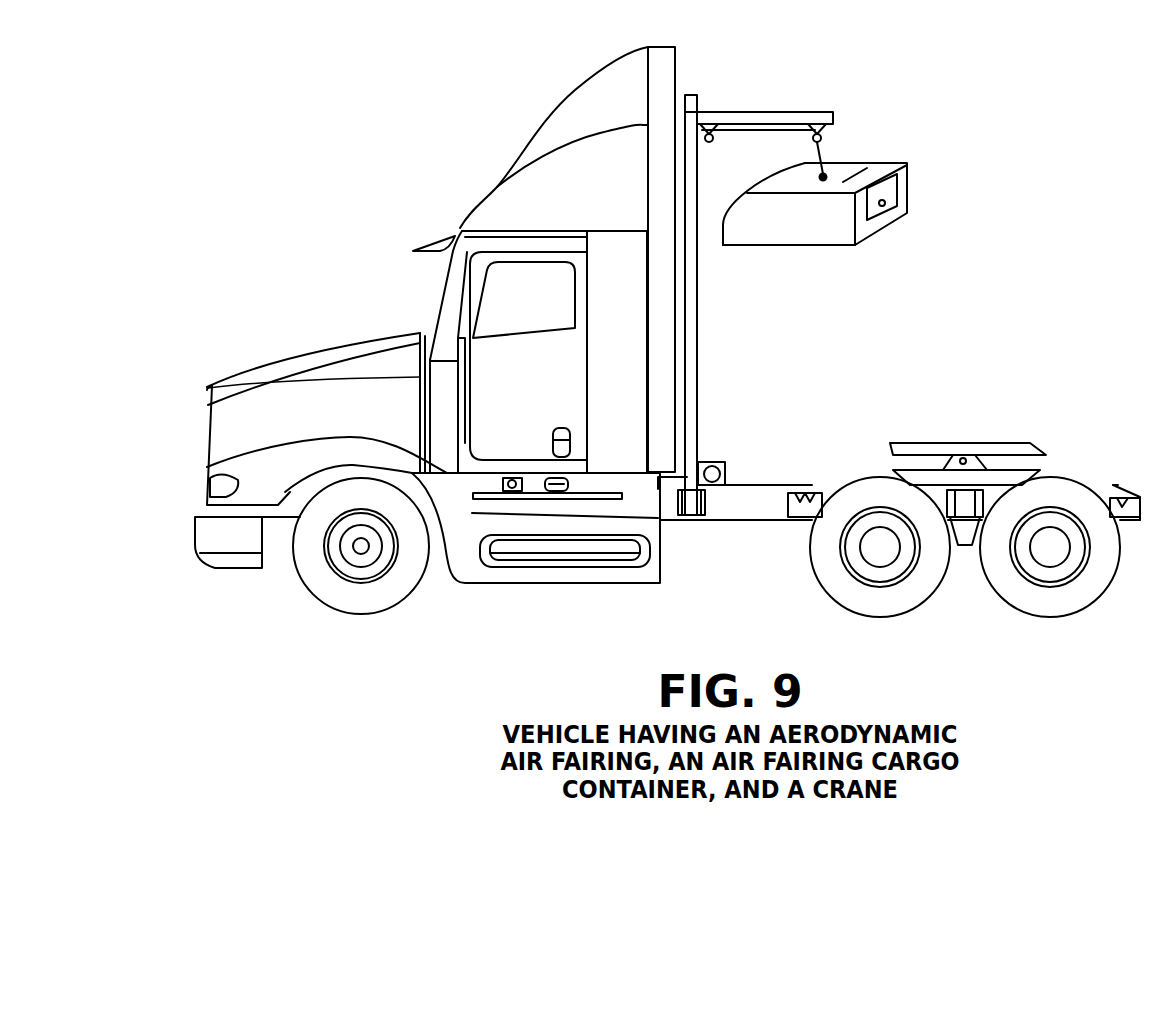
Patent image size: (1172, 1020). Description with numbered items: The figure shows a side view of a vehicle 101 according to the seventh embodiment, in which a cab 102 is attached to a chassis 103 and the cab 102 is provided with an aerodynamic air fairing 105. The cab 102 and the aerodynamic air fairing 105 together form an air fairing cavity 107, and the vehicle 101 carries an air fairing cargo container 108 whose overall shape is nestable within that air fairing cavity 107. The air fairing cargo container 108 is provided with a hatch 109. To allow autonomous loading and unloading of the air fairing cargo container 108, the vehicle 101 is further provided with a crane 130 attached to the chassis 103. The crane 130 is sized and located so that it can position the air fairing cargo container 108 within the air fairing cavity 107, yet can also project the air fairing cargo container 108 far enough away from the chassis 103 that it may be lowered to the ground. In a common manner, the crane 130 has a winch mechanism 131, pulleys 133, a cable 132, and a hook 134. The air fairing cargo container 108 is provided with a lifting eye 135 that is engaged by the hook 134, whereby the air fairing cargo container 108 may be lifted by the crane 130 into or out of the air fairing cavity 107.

The vehicle 101 is at (348, 332).
The cab 102 is at (430, 303).
The chassis 103 is at (728, 525).
The aerodynamic air fairing 105 is at (551, 100).
The air fairing cavity 107 is at (678, 190).
The air fairing cargo container 108 is at (891, 231).
The hatch 109 is at (890, 190).
The crane 130 is at (696, 375).
The winch mechanism 131 is at (733, 468).
The cable 132 is at (710, 317).
The pulleys 133 is at (714, 132).
The hook 134 is at (831, 156).
The lifting eye 135 is at (832, 177).